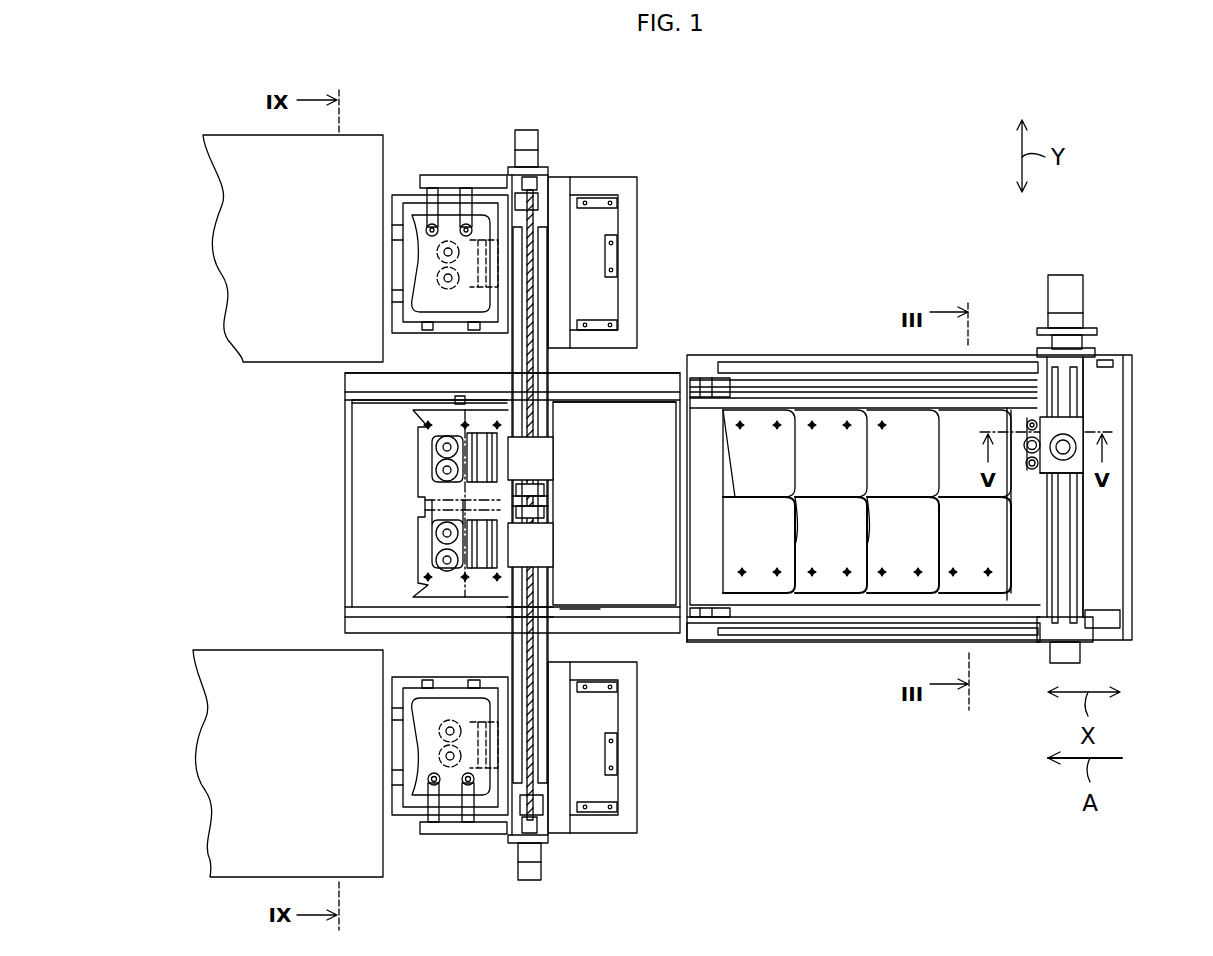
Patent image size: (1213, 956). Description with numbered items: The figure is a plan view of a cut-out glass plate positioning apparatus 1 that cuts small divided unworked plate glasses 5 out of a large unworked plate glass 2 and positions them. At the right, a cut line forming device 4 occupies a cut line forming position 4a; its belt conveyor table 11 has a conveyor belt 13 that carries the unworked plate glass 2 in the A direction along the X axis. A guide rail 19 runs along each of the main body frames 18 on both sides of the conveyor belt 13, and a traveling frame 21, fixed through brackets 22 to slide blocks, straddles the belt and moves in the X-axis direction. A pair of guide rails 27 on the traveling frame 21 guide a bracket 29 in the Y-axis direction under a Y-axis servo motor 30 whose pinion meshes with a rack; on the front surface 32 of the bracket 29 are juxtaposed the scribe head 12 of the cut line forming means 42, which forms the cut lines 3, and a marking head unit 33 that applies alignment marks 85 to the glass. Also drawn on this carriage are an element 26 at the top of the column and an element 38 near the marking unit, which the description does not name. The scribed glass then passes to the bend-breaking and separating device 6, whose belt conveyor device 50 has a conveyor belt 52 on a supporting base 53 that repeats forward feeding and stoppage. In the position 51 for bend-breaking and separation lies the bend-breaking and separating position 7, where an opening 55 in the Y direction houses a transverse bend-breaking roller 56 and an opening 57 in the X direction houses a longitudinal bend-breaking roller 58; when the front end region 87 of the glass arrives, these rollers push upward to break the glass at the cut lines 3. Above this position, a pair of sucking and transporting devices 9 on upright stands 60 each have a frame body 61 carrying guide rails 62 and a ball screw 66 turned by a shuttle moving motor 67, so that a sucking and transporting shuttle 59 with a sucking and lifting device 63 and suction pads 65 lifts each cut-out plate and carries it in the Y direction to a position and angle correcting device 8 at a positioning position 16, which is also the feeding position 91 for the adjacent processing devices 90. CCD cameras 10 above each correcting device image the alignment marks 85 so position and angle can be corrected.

The cut-out glass plate positioning apparatus 1 is at (823, 186).
The unworked plate glass 2 is at (760, 407).
The cut lines 3 is at (723, 430).
The cut line forming device 4 is at (892, 653).
The cut line forming position 4a is at (763, 245).
The small divided unworked plate glasses 5 is at (750, 433).
The bend-breaking and separating device 6 is at (635, 420).
The bend-breaking and separating position 7 is at (438, 492).
The position and angle correcting devices 8 is at (415, 202).
The sucking and transporting devices 9 is at (436, 472).
The CCD cameras 10 is at (432, 188).
The belt conveyor table 11 is at (792, 393).
The scribe head 12 is at (1013, 458).
The conveyor belt 13 is at (843, 398).
The positioning position 16 is at (410, 250).
The main body frames 18 is at (857, 643).
The guide rail 19 is at (830, 363).
The traveling frame 21 is at (1082, 540).
The brackets 22 is at (1082, 348).
The motor 26 is at (1063, 283).
The guide rails 27 is at (1075, 410).
The bracket 29 is at (1067, 427).
The Y-axis servo motor 30 is at (1067, 443).
The front surface 32 is at (1038, 420).
The marking head unit 33 is at (1030, 420).
The roller 38 is at (1028, 467).
The cut line forming means 42 is at (1045, 475).
The belt conveyor device 50 is at (597, 420).
The position for effecting bend-breaking and separation 51 is at (358, 503).
The conveyor belt 52 is at (625, 573).
The supporting base 53 is at (610, 608).
The opening 55 is at (484, 405).
The transverse bend-breaking roller 56 is at (472, 403).
The opening 57 is at (425, 500).
The longitudinal bend-breaking roller 58 is at (423, 508).
The sucking and transporting shuttle 59 is at (477, 447).
The upright stand 60 is at (580, 177).
The frame body 61 is at (533, 300).
The guide rails 62 is at (538, 225).
The sucking and lifting device 63 is at (442, 443).
The suction pads 65 is at (440, 455).
The ball screw 66 is at (530, 308).
The shuttle moving motor 67 is at (527, 152).
The alignment marks 85 is at (848, 427).
The front end region 87 is at (430, 525).
The processing devices 90 is at (266, 205).
The feeding position 91 is at (428, 265).